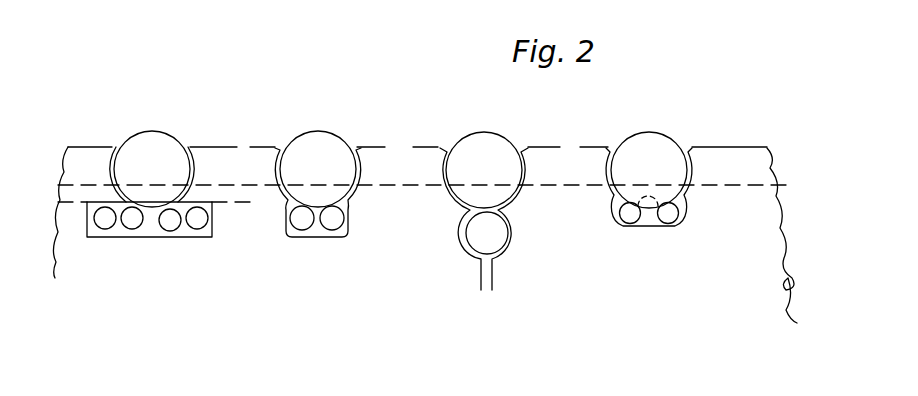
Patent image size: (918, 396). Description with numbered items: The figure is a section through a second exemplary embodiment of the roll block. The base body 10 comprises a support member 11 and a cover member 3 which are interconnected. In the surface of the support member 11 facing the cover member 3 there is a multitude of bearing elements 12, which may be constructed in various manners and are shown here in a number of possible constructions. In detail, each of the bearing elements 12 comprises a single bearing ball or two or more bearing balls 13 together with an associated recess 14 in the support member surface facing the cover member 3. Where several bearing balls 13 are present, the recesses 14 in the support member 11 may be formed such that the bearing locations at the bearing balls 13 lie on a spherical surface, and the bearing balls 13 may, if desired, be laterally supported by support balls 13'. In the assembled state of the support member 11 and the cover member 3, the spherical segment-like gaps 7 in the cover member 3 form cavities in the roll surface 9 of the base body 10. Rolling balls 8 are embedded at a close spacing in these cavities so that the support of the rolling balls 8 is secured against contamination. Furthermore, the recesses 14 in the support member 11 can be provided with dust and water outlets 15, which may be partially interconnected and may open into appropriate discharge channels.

The cover member 3 is at (767, 177).
The spherical segment-like gaps 7 is at (190, 160).
The rolling balls 8 is at (157, 143).
The roll surface 9 is at (590, 148).
The base body 10 is at (758, 136).
The support member 11 is at (796, 245).
The bearing elements 12 is at (152, 308).
The bearing balls 13 is at (400, 234).
The support balls 13' is at (159, 239).
The recess 14 is at (197, 238).
The dust and water outlets 15 is at (493, 278).